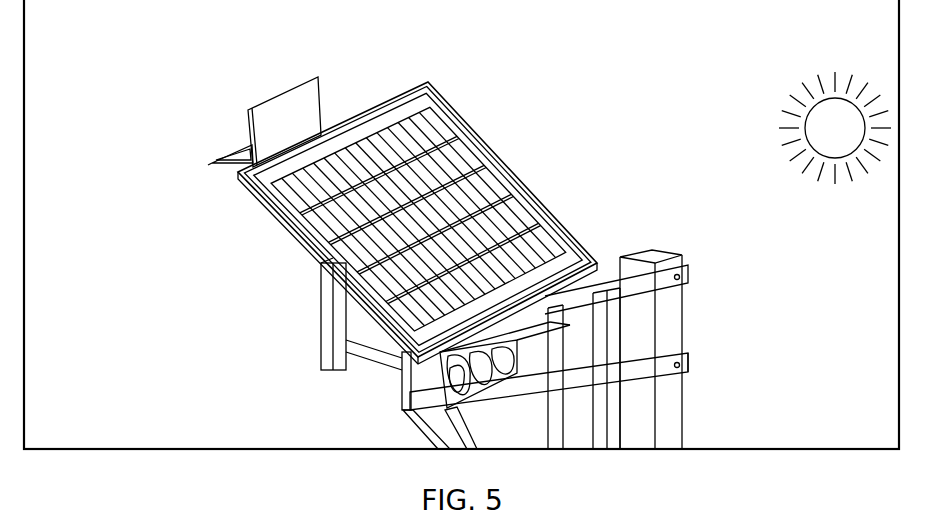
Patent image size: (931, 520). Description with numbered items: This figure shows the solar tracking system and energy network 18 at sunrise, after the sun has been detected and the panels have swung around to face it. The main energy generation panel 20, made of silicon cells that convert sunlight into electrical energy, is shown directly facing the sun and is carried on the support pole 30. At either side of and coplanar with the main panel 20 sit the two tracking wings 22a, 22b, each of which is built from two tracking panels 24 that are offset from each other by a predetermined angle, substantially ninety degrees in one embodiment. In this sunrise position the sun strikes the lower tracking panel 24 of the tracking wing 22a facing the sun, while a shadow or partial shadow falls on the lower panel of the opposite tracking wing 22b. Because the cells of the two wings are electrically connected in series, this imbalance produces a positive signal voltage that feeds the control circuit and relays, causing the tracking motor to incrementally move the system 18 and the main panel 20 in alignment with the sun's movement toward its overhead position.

The solar tracking system and energy network 18 is at (614, 74).
The main energy generation panel 20 is at (440, 81).
The tracking wing 22a is at (532, 348).
The tracking wing 22b is at (204, 136).
The tracking panel 24 is at (457, 373).
The support pole 30 is at (675, 408).